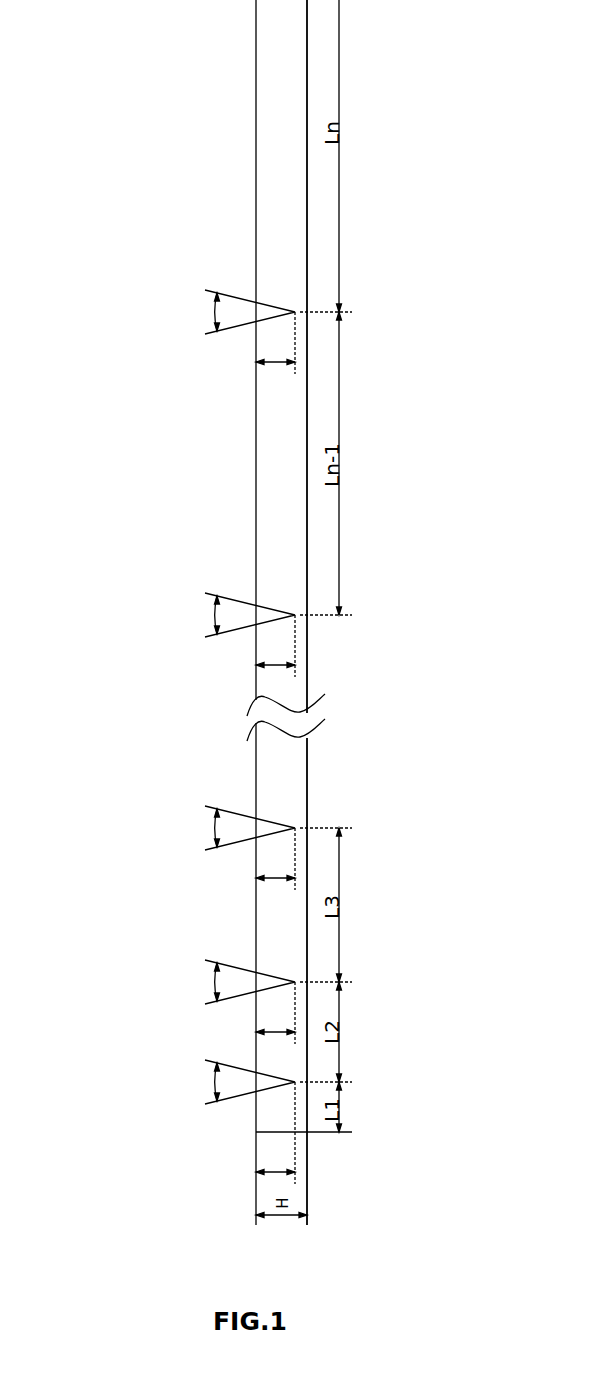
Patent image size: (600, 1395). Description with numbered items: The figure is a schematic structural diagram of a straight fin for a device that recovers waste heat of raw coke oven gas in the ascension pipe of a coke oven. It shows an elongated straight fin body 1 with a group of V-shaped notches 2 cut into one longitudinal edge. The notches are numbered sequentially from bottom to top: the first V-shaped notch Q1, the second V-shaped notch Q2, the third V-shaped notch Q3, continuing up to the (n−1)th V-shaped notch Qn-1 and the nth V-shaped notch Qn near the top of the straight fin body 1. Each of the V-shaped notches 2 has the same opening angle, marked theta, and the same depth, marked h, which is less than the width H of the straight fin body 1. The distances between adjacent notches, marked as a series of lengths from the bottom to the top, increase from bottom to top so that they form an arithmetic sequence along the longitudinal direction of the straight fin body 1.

The straight fin body 1 is at (292, 240).
The V-shaped notches 2 is at (240, 312).
The first V-shaped notch Q1 is at (262, 1093).
The second V-shaped notch Q2 is at (262, 970).
The third V-shaped notch Q3 is at (260, 820).
The (n−1)th V-shaped notch Qn-1 is at (263, 603).
The nth V-shaped notch Qn is at (265, 303).